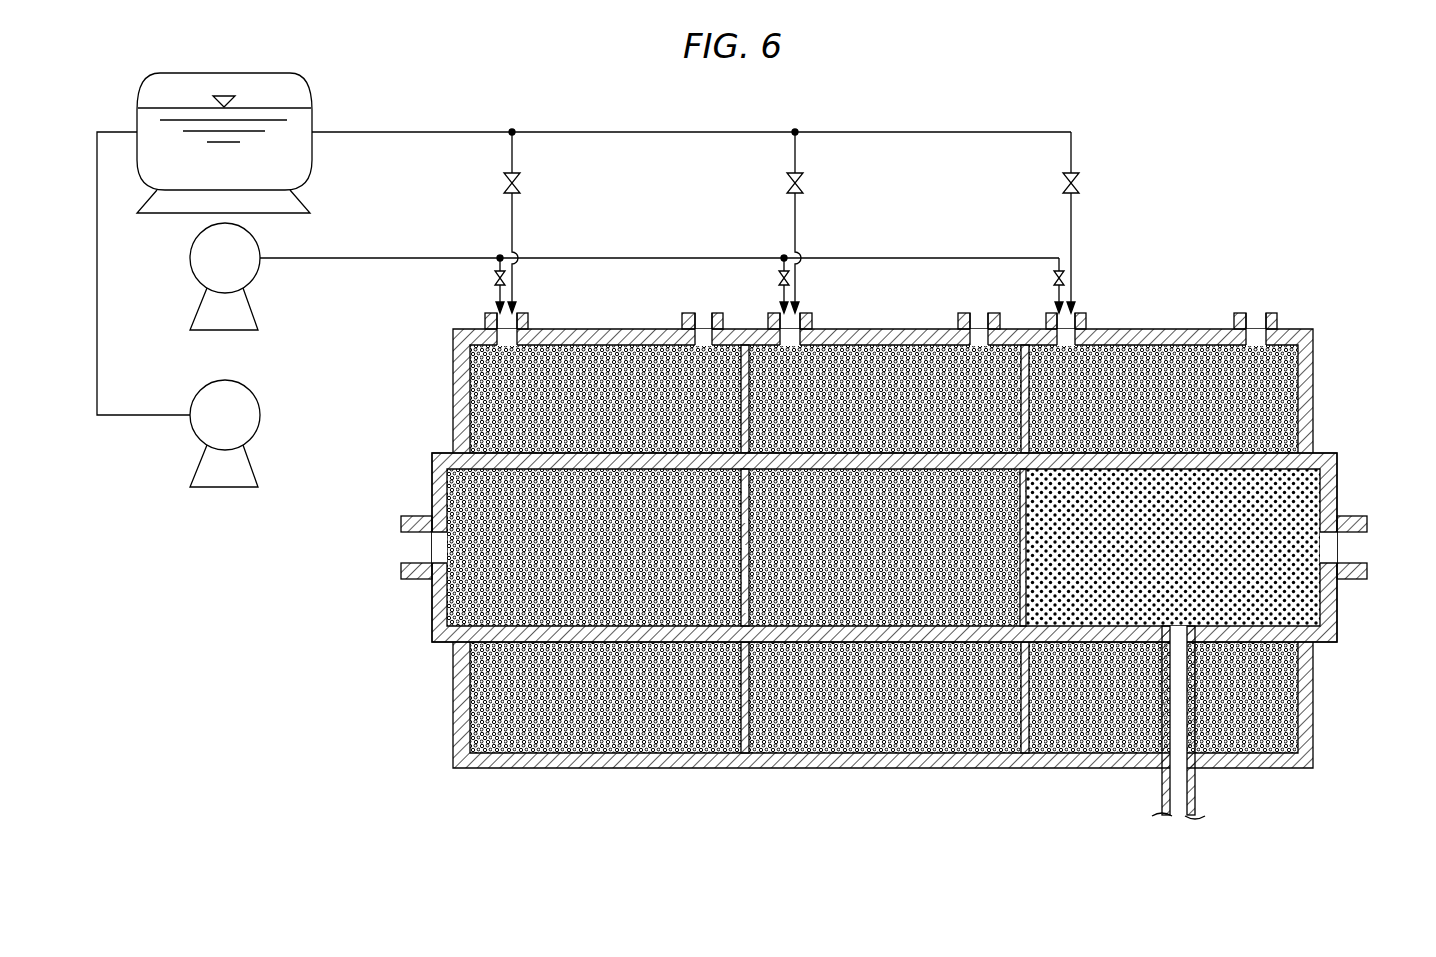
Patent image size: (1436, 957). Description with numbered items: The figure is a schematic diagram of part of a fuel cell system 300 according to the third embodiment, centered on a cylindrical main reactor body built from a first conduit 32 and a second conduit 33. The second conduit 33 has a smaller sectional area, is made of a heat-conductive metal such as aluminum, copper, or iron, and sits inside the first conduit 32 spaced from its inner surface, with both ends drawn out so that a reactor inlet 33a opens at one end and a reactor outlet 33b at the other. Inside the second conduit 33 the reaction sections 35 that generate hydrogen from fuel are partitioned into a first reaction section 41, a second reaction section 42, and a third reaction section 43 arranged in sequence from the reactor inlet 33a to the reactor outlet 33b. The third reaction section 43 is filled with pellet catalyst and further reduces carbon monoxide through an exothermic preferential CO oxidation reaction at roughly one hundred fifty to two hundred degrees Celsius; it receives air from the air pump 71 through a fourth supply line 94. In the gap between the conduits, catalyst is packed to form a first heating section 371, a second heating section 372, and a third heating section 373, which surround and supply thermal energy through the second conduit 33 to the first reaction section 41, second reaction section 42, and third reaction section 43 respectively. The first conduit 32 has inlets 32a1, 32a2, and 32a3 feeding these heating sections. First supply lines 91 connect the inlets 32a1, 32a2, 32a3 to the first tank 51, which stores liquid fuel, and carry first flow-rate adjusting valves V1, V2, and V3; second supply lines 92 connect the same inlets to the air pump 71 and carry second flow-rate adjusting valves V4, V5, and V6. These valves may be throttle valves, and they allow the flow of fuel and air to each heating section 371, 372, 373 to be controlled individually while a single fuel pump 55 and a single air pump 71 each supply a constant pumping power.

The fuel cell system 300 is at (1268, 148).
The first tank 51 is at (305, 92).
The fuel pump 55 is at (260, 412).
The air pump 71 is at (190, 258).
The first supply lines 91 is at (512, 153).
The second supply lines 92 is at (495, 266).
The first flow-rate adjusting valve V1 is at (516, 180).
The first flow-rate adjusting valve V2 is at (800, 180).
The first flow-rate adjusting valve V3 is at (1076, 180).
The second flow-rate adjusting valve V4 is at (495, 283).
The second flow-rate adjusting valve V5 is at (780, 283).
The second flow-rate adjusting valve V6 is at (1055, 283).
The first conduit 32 is at (915, 555).
The inlet 32a1 is at (528, 322).
The inlet 32a2 is at (812, 322).
The inlet 32a3 is at (1086, 322).
The second conduit 33 is at (903, 661).
The reactor inlet 33a is at (401, 545).
The reactor outlet 33b is at (1367, 545).
The reaction sections 35 is at (883, 687).
The first reaction section 41 is at (632, 632).
The second reaction section 42 is at (880, 632).
The third reaction section 43 is at (1173, 661).
The first heating section 371 is at (612, 753).
The second heating section 372 is at (933, 753).
The third heating section 373 is at (1065, 753).
The fourth supply line 94 is at (1195, 787).